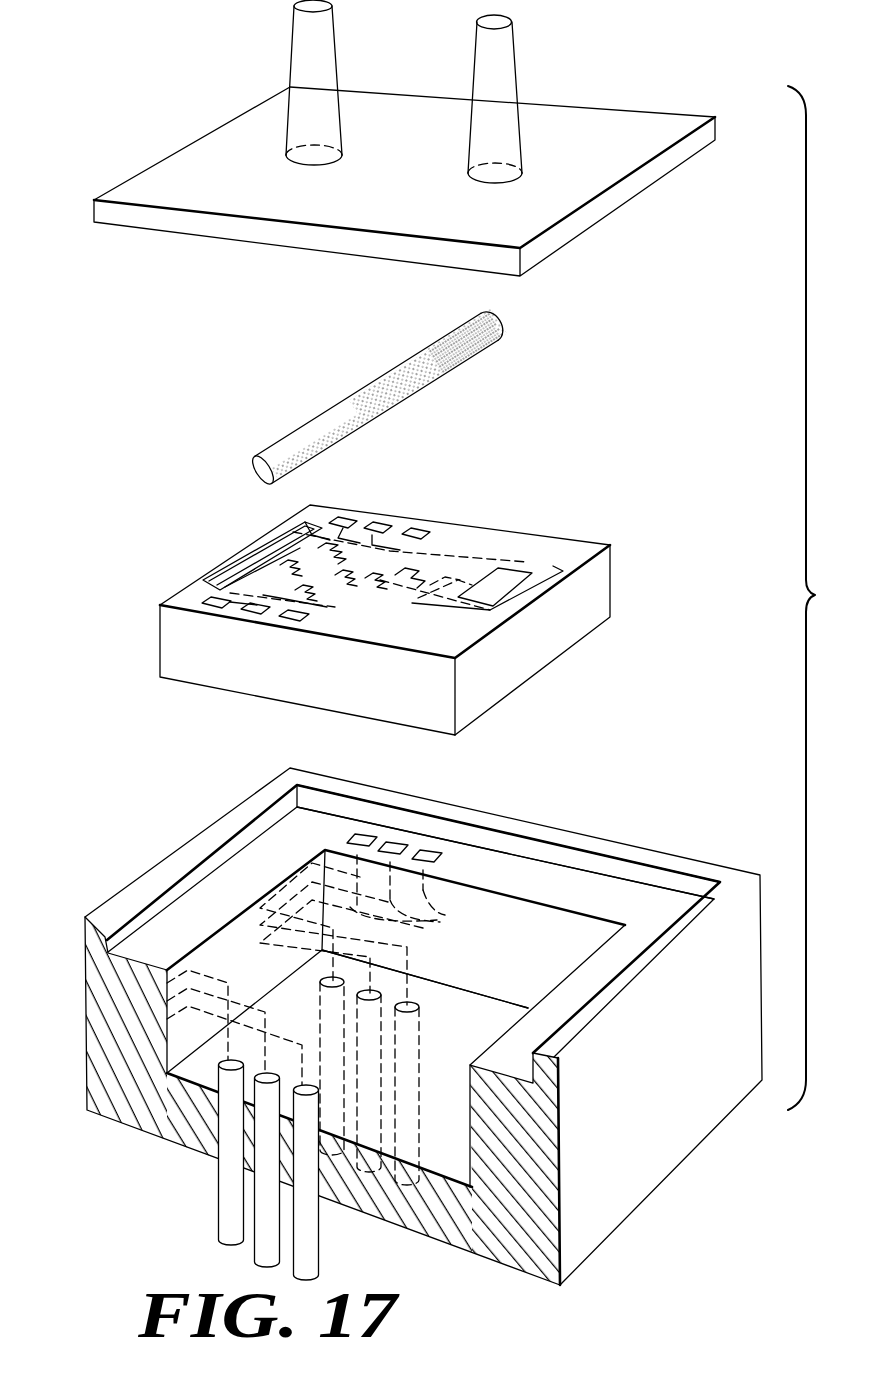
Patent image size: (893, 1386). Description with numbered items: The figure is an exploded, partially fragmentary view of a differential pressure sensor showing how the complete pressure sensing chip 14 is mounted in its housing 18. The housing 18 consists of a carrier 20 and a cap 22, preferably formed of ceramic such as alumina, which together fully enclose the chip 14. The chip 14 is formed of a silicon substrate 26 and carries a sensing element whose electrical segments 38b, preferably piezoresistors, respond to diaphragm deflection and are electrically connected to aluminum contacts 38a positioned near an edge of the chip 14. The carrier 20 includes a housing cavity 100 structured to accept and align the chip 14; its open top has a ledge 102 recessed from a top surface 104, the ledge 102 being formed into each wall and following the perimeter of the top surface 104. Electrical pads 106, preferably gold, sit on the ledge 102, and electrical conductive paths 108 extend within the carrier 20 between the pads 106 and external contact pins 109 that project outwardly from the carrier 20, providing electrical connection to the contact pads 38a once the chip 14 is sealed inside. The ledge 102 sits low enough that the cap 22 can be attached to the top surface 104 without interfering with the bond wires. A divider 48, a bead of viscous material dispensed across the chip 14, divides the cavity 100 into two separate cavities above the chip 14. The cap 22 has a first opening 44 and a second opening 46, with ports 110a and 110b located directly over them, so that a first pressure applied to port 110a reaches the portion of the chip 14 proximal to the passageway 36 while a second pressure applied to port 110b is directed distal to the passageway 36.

The housing 18 is at (816, 598).
The cap 22 is at (166, 157).
The port 110a is at (507, 55).
The port 110b is at (327, 50).
The first opening 44 is at (485, 168).
The second opening 46 is at (305, 152).
The divider 48 is at (388, 376).
The semiconductor chip 14 is at (158, 637).
The substrate 26 is at (537, 643).
The passageway 36 is at (505, 577).
The contacts 38a is at (418, 528).
The electrical segments 38b is at (313, 545).
The carrier 20 is at (84, 997).
The housing cavity 100 is at (538, 928).
The ledge 102 is at (615, 898).
The top surface 104 is at (713, 900).
The electrical pads 106 is at (427, 853).
The electrical conductive paths 108 is at (425, 918).
The external contact pins 109 is at (333, 1028).